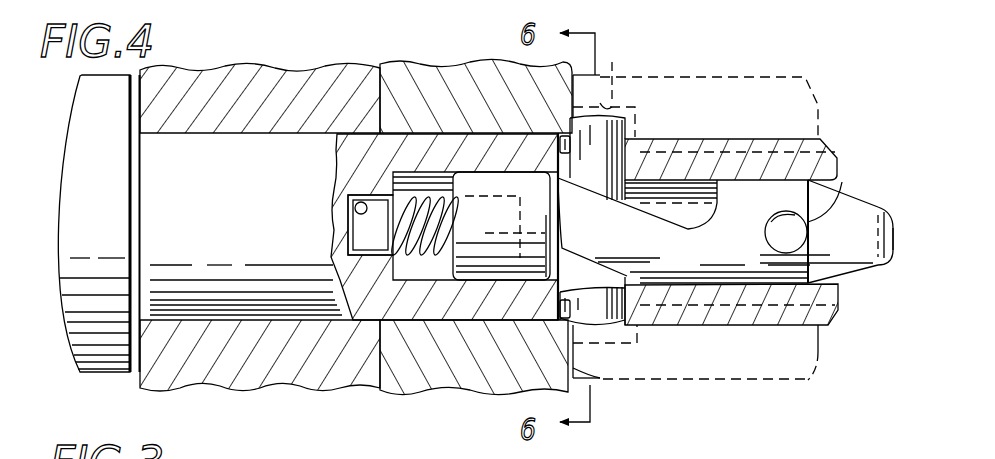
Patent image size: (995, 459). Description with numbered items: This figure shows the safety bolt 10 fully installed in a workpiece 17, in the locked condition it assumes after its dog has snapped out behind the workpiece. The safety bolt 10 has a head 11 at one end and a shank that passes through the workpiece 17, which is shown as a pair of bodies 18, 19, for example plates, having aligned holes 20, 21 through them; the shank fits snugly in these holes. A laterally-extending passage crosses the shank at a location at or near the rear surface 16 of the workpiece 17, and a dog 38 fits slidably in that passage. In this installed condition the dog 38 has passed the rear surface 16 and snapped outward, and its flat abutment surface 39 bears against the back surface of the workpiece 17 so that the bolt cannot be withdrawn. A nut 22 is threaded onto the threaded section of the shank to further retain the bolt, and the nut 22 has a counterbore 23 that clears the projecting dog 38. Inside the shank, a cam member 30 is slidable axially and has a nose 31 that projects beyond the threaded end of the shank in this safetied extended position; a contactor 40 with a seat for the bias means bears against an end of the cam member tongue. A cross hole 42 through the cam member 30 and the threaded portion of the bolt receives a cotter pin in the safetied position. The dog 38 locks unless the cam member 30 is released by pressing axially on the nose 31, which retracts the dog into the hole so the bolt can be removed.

The safety bolt 10 is at (230, 121).
The head 11 is at (76, 95).
The rear surface 16 is at (600, 378).
The workpiece 17 is at (378, 405).
The body 18 is at (238, 384).
The body 19 is at (450, 395).
The hole 20 is at (291, 132).
The hole 21 is at (407, 136).
The nut 22 is at (725, 77).
The counterbore 23 is at (612, 68).
The cam member 30 is at (879, 203).
The nose 31 is at (893, 254).
The dog 38 is at (640, 107).
The flat abutment surface 39 is at (566, 126).
The contactor 40 is at (490, 281).
The cross hole 42 is at (847, 190).